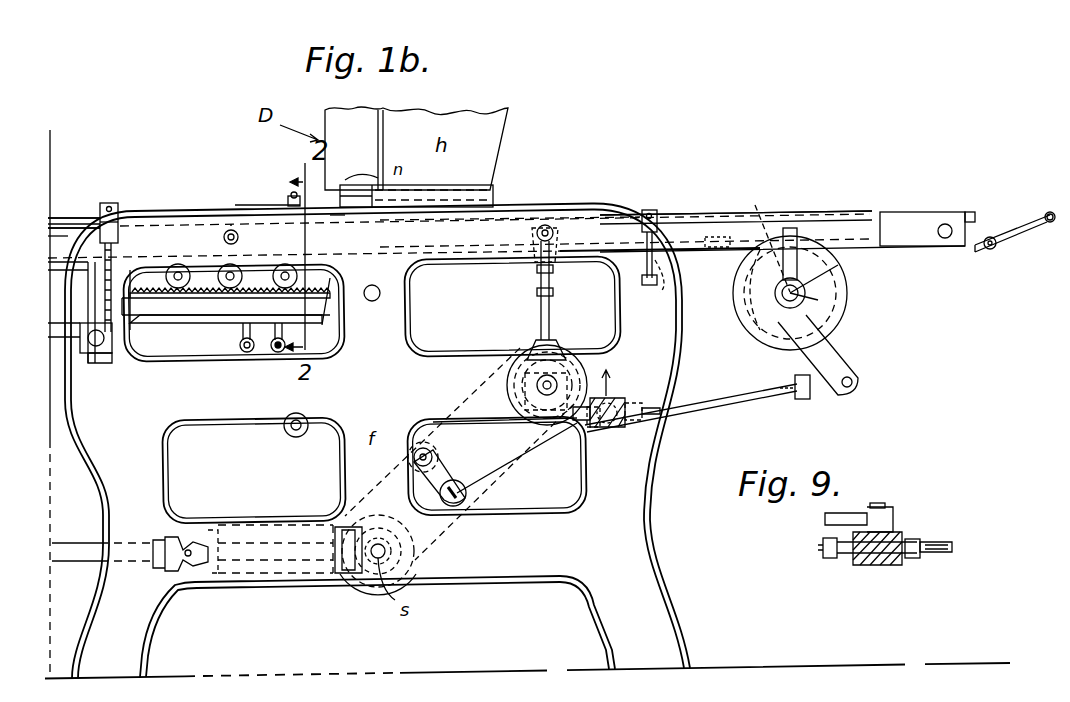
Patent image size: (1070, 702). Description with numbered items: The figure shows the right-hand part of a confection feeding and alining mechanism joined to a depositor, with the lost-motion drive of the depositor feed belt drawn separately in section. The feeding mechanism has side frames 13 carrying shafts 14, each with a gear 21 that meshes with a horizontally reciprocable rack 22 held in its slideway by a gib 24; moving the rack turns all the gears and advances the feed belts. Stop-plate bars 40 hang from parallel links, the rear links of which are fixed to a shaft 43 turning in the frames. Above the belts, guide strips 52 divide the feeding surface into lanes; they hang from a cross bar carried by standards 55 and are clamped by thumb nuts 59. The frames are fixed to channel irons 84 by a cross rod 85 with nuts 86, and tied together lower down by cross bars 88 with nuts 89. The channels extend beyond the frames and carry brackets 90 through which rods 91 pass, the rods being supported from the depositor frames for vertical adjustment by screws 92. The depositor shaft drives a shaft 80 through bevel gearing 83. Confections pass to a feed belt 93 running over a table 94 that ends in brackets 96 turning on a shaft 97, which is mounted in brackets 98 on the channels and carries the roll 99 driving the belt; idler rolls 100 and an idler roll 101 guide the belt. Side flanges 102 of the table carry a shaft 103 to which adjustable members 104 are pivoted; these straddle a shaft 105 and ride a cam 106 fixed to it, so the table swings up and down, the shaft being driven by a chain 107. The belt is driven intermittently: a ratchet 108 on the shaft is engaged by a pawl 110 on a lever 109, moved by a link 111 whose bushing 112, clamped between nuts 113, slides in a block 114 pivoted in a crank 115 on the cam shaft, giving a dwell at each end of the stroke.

In FIG. 1b, the side frame 13 is at (172, 268).
In FIG. 1b, the shaft 14 is at (222, 267).
In FIG. 1b, the gear 21 is at (284, 264).
In FIG. 1b, the rack 22 is at (200, 300).
In FIG. 1b, the gib 24 is at (226, 301).
In FIG. 1b, the bar 40 is at (213, 325).
In FIG. 1b, the shaft 43 is at (245, 352).
In FIG. 1b, the guide strip 52 is at (63, 215).
In FIG. 1b, the standard 55 is at (285, 198).
In FIG. 1b, the thumb nut 59 is at (290, 195).
In FIG. 1b, the shaft 80 is at (75, 540).
In FIG. 1b, the bevel gearing 83 is at (372, 560).
In FIG. 1b, the channel iron 84 is at (918, 211).
In FIG. 1b, the rod 85 is at (228, 230).
In FIG. 1b, the nut 86 is at (231, 230).
In FIG. 1b, the cross bar 88 is at (270, 352).
In FIG. 1b, the nut 89 is at (300, 360).
In FIG. 1b, the bracket 90 is at (85, 330).
In FIG. 1b, the rod 91 is at (82, 354).
In FIG. 1b, the screw 92 is at (100, 290).
In FIG. 1b, the belt 93 is at (332, 220).
In FIG. 1b, the table 94 is at (600, 207).
In FIG. 1b, the bracket 96 is at (778, 300).
In FIG. 1b, the shaft 97 is at (812, 300).
In FIG. 1b, the bracket 98 is at (846, 285).
In FIG. 1b, the roll 99 is at (840, 318).
In FIG. 1b, the idler roll 100 is at (1050, 212).
In FIG. 1b, the idler roll 101 is at (711, 257).
In FIG. 1b, the side flange 102 is at (462, 226).
In FIG. 1b, the shaft 103 is at (537, 236).
In FIG. 1b, the member 104 is at (540, 284).
In FIG. 1b, the shaft 105 is at (545, 398).
In FIG. 1b, the cam 106 is at (495, 372).
In FIG. 1b, the chain 107 is at (478, 470).
In FIG. 1b, the ratchet 108 is at (755, 330).
In FIG. 1b, the lever 109 is at (848, 360).
In FIG. 1b, the pawl 110 is at (812, 220).
In FIG. 1b, the link 111 is at (765, 385).
In FIG. 9, the link 111 is at (950, 540).
In FIG. 1b, the bushing 112 is at (605, 430).
In FIG. 9, the bushing 112 is at (843, 560).
In FIG. 1b, the nut 113 is at (676, 440).
In FIG. 9, the nut 113 is at (828, 560).
In FIG. 1b, the block 114 is at (622, 430).
In FIG. 9, the block 114 is at (882, 566).
In FIG. 1b, the crank 115 is at (612, 394).
In FIG. 9, the crank 115 is at (895, 510).